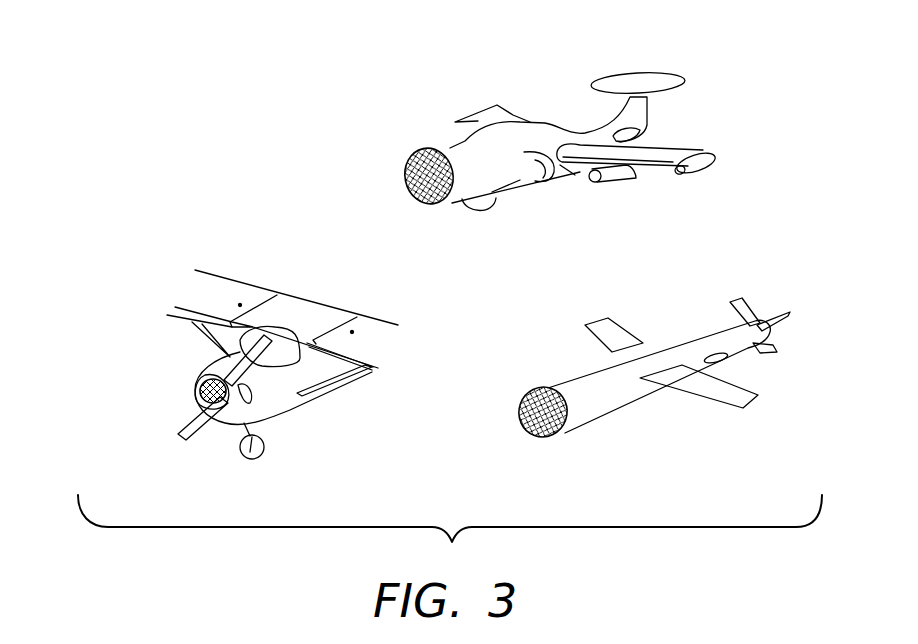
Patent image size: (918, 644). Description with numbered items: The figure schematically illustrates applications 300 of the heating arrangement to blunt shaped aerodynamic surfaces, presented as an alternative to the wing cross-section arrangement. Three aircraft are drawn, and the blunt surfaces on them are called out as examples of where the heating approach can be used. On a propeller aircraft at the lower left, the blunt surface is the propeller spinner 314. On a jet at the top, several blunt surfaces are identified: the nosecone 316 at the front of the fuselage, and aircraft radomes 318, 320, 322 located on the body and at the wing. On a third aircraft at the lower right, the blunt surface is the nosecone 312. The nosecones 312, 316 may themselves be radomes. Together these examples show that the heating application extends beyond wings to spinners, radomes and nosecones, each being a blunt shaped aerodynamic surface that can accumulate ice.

The applications 300 is at (206, 153).
The nosecone 312 is at (522, 436).
The propeller spinner 314 is at (190, 400).
The nosecone 316 is at (400, 196).
The aircraft radome 318 is at (472, 224).
The aircraft radome 320 is at (571, 192).
The aircraft radome 322 is at (680, 184).